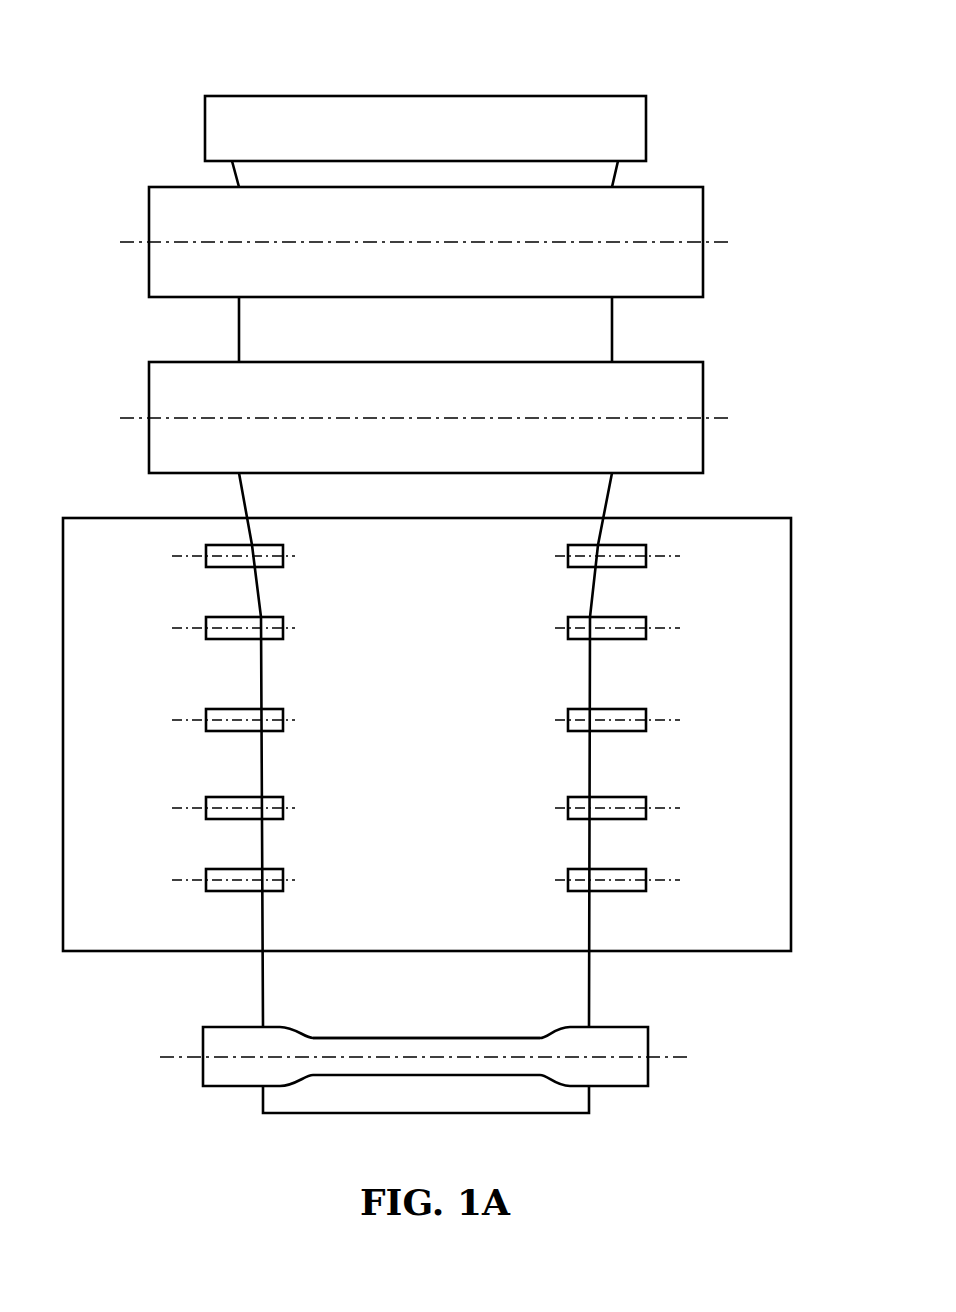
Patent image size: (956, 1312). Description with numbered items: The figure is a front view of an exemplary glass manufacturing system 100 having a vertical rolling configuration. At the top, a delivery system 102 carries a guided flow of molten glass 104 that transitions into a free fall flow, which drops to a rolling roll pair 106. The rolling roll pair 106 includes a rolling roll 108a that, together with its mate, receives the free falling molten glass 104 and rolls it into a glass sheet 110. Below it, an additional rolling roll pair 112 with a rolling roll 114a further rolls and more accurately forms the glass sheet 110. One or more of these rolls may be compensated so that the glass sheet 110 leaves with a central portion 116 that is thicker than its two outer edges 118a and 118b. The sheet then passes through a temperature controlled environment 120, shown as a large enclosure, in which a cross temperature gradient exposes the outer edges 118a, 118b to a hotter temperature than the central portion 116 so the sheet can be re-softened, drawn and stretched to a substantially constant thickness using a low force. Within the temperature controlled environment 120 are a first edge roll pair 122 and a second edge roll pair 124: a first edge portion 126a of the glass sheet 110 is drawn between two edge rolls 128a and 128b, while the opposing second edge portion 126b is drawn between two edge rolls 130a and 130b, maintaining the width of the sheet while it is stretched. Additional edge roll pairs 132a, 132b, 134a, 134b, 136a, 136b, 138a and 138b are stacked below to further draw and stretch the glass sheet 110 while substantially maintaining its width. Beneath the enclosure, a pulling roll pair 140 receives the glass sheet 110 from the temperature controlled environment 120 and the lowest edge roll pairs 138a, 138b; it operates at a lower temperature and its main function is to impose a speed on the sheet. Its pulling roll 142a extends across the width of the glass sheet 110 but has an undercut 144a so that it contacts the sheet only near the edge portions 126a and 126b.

The glass manufacturing system 100 is at (752, 47).
The delivery system 102 is at (646, 128).
The molten glass 104 is at (615, 175).
The rolling roll pair 106 is at (449, 261).
The rolling roll 108a is at (703, 277).
The glass sheet 110 is at (612, 314).
The additional rolling roll pair 112 is at (449, 437).
The rolling roll 114a is at (703, 437).
The central portion 116 is at (439, 336).
The outer edge 118a is at (577, 342).
The outer edge 118b is at (275, 341).
The temperature controlled environment 120 is at (792, 627).
The first edge roll pair 122 is at (657, 770).
The second edge roll pair 124 is at (187, 770).
The first edge portion 126a is at (580, 538).
The second edge portion 126b is at (270, 540).
The edge roll 128a is at (657, 770).
The edge roll 128b is at (657, 770).
The edge roll 130a is at (187, 770).
The edge roll 130b is at (187, 770).
The additional edge roll pair 132a is at (637, 655).
The additional edge roll pair 132b is at (213, 655).
The additional edge roll pair 134a is at (637, 745).
The additional edge roll pair 134b is at (213, 745).
The additional edge roll pair 136a is at (637, 832).
The additional edge roll pair 136b is at (213, 832).
The additional edge roll pair 138a is at (637, 906).
The additional edge roll pair 138b is at (213, 906).
The pulling roll pair 140 is at (438, 1050).
The pulling roll 142a is at (438, 1028).
The undercut 144a is at (350, 1038).